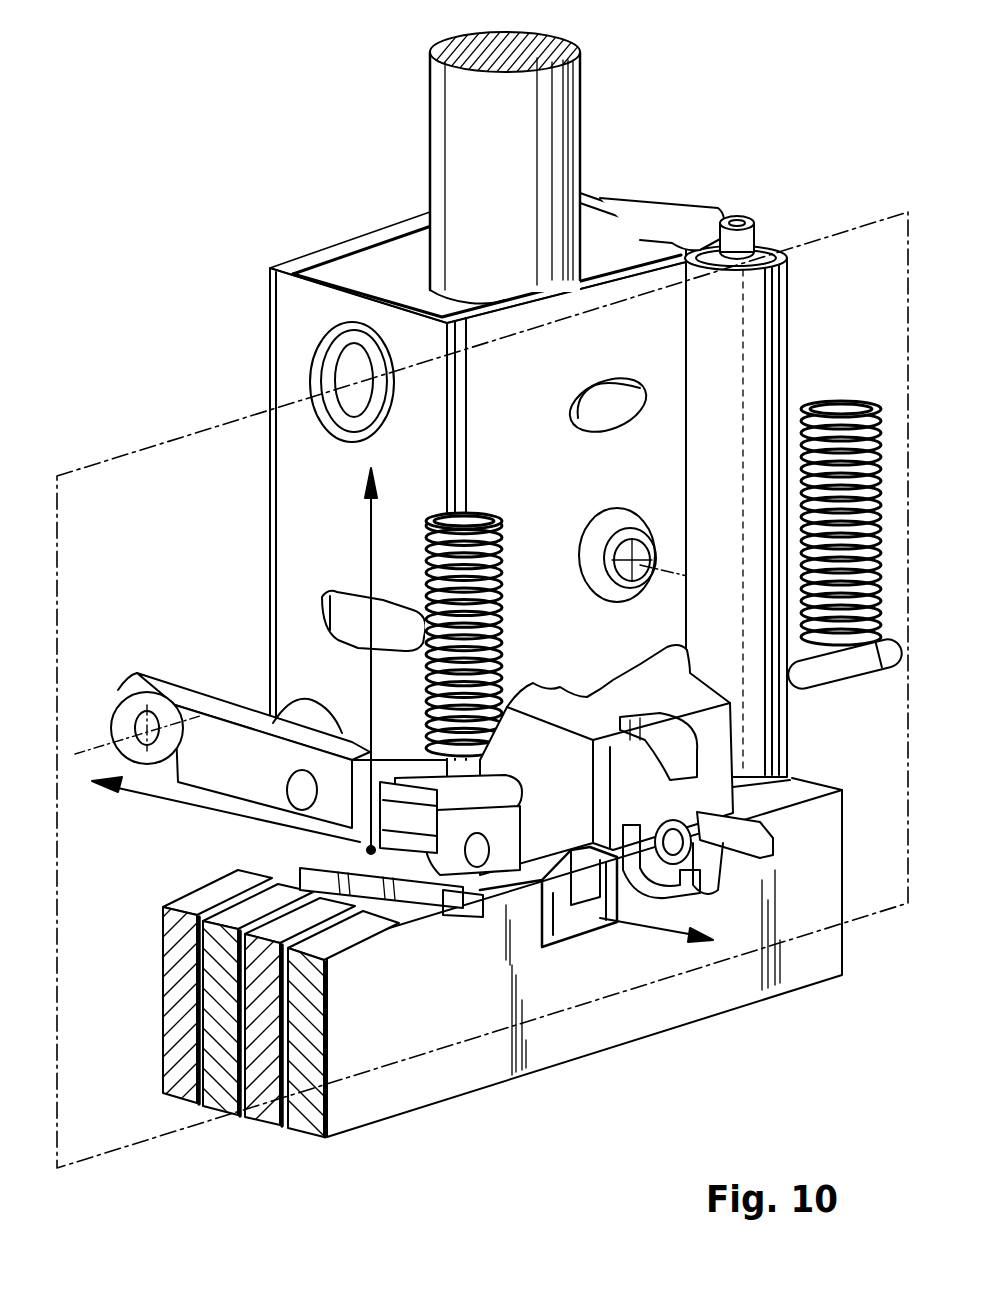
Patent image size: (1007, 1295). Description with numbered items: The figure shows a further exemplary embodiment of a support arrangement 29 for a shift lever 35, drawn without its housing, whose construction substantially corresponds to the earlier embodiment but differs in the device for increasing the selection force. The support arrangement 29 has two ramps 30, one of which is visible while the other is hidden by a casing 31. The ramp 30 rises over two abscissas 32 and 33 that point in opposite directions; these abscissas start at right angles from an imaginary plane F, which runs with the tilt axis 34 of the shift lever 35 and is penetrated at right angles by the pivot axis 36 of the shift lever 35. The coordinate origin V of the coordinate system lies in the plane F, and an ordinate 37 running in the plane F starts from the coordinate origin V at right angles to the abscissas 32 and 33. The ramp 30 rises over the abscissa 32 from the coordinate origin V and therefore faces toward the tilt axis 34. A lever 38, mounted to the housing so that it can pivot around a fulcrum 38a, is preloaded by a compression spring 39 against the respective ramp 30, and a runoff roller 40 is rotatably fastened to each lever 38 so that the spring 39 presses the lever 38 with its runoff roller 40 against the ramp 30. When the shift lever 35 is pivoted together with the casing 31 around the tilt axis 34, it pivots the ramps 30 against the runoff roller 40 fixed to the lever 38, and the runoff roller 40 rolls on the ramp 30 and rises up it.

The support arrangement 29 is at (648, 178).
The ramp 30 is at (285, 843).
The casing 31 is at (478, 485).
The abscissa 32 is at (665, 928).
The abscissa 33 is at (140, 800).
The tilt axis 34 is at (258, 407).
The shift lever 35 is at (455, 143).
The pivot axis 36 is at (755, 580).
The ordinate 37 is at (371, 503).
The lever 38 is at (485, 749).
The fulcrum 38a is at (160, 722).
The compression spring 39 is at (492, 515).
The runoff roller 40 is at (320, 703).
The imaginary plane F is at (150, 490).
The coordinate origin V is at (370, 856).